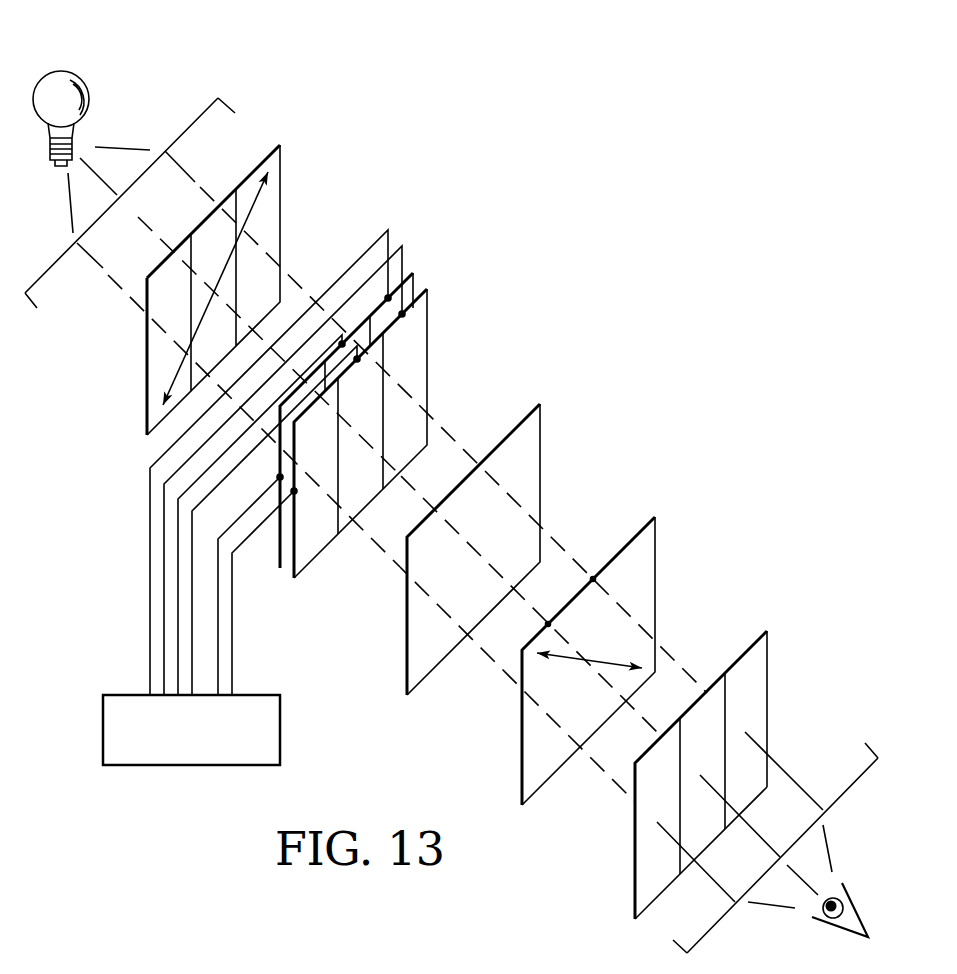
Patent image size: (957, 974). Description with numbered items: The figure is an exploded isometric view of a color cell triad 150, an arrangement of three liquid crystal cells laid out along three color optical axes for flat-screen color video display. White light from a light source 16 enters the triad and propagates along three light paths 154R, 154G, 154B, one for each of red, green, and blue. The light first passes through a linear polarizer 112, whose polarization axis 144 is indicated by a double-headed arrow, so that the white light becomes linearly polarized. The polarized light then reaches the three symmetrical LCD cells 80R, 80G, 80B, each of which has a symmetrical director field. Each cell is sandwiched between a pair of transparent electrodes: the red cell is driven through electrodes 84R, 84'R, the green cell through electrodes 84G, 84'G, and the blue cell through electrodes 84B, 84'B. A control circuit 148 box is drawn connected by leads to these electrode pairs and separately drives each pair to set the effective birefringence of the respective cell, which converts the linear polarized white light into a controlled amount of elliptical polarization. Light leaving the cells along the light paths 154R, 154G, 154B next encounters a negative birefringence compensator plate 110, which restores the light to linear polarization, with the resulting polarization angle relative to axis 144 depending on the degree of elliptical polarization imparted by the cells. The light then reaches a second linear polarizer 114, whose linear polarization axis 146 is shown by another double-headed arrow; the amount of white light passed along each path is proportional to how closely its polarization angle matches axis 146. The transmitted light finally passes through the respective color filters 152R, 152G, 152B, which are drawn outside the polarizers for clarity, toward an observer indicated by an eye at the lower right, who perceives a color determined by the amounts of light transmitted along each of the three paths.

The light source 16 is at (52, 70).
The light path 154G is at (143, 224).
The light path 154B is at (200, 187).
The light path 154R is at (107, 277).
The linear polarizer 112 is at (277, 187).
The polarization axis 144 is at (253, 208).
The transparent electrode 84'R is at (315, 484).
The transparent electrode 84R is at (313, 532).
The transparent electrode 84G is at (368, 387).
The transparent electrode 84'G is at (270, 460).
The transparent electrode 84B is at (405, 343).
The transparent electrode 84'B is at (318, 460).
The symmetrical LCD cell 80B is at (430, 468).
The symmetrical LCD cell 80G is at (378, 512).
The symmetrical LCD cell 80R is at (335, 562).
The control circuit 148 is at (132, 695).
The negative birefringence compensator plate 110 is at (532, 448).
The linear polarizer 114 is at (645, 553).
The linear polarization axis 146 is at (568, 662).
The color filter 152R is at (658, 845).
The color filter 152G is at (705, 708).
The color filter 152B is at (752, 697).
The color cell triad 150 is at (598, 288).